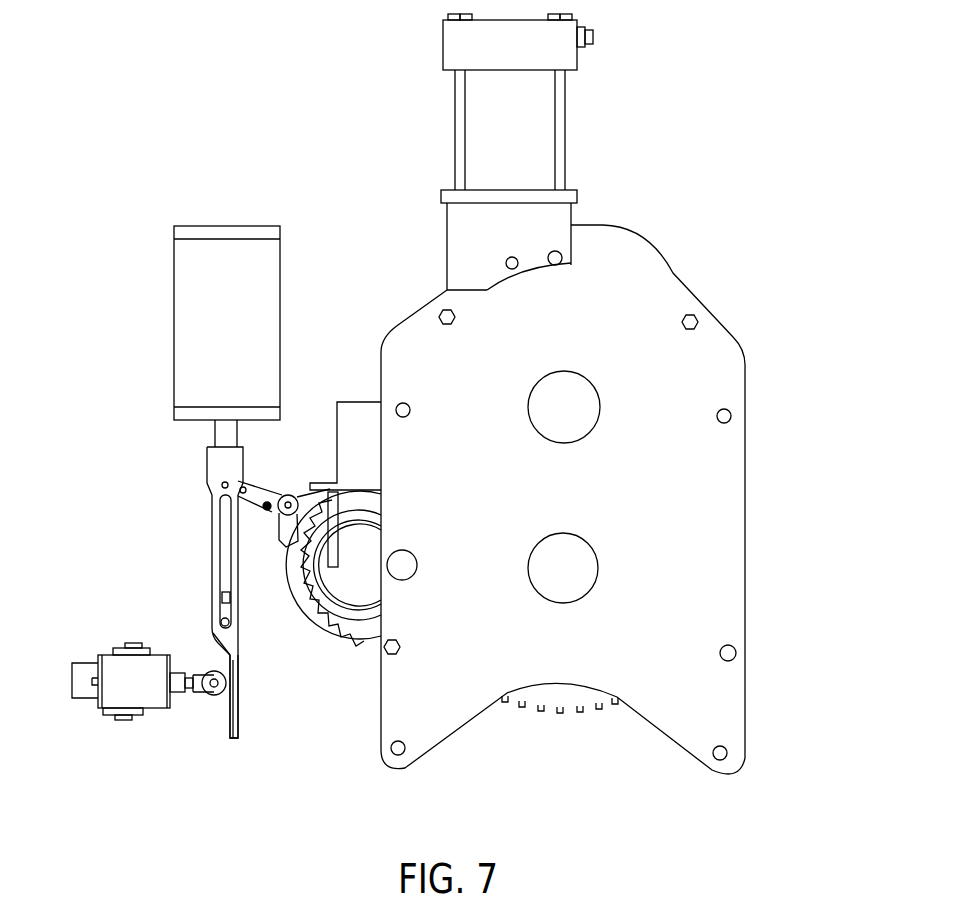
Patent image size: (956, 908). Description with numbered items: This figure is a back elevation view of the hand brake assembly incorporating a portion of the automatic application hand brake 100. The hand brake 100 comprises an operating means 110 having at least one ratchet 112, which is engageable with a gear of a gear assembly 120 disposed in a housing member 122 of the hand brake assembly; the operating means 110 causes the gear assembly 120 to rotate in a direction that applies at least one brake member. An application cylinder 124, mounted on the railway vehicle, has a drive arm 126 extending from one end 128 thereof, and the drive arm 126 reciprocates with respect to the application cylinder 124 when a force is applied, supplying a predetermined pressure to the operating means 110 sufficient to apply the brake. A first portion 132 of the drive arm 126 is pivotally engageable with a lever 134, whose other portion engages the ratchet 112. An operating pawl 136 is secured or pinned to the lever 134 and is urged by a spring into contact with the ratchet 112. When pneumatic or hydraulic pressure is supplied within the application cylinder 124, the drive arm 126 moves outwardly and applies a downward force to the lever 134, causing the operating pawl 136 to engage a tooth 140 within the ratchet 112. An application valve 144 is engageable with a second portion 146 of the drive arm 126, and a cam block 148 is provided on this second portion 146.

The automatic application hand brake 100 is at (150, 238).
The operating means 110 is at (128, 473).
The ratchet 112 is at (343, 603).
The gear assembly 120 is at (584, 413).
The housing member 122 is at (712, 577).
The application cylinder 124 is at (253, 267).
The drive arm 126 is at (215, 461).
The end of application cylinder 128 is at (205, 422).
The first portion of drive arm 132 is at (212, 488).
The lever 134 is at (262, 490).
The operating pawl 136 is at (278, 525).
The tooth 140 is at (302, 585).
The application valve 144 is at (145, 698).
The second portion of drive arm 146 is at (225, 642).
The cam block 148 is at (237, 715).